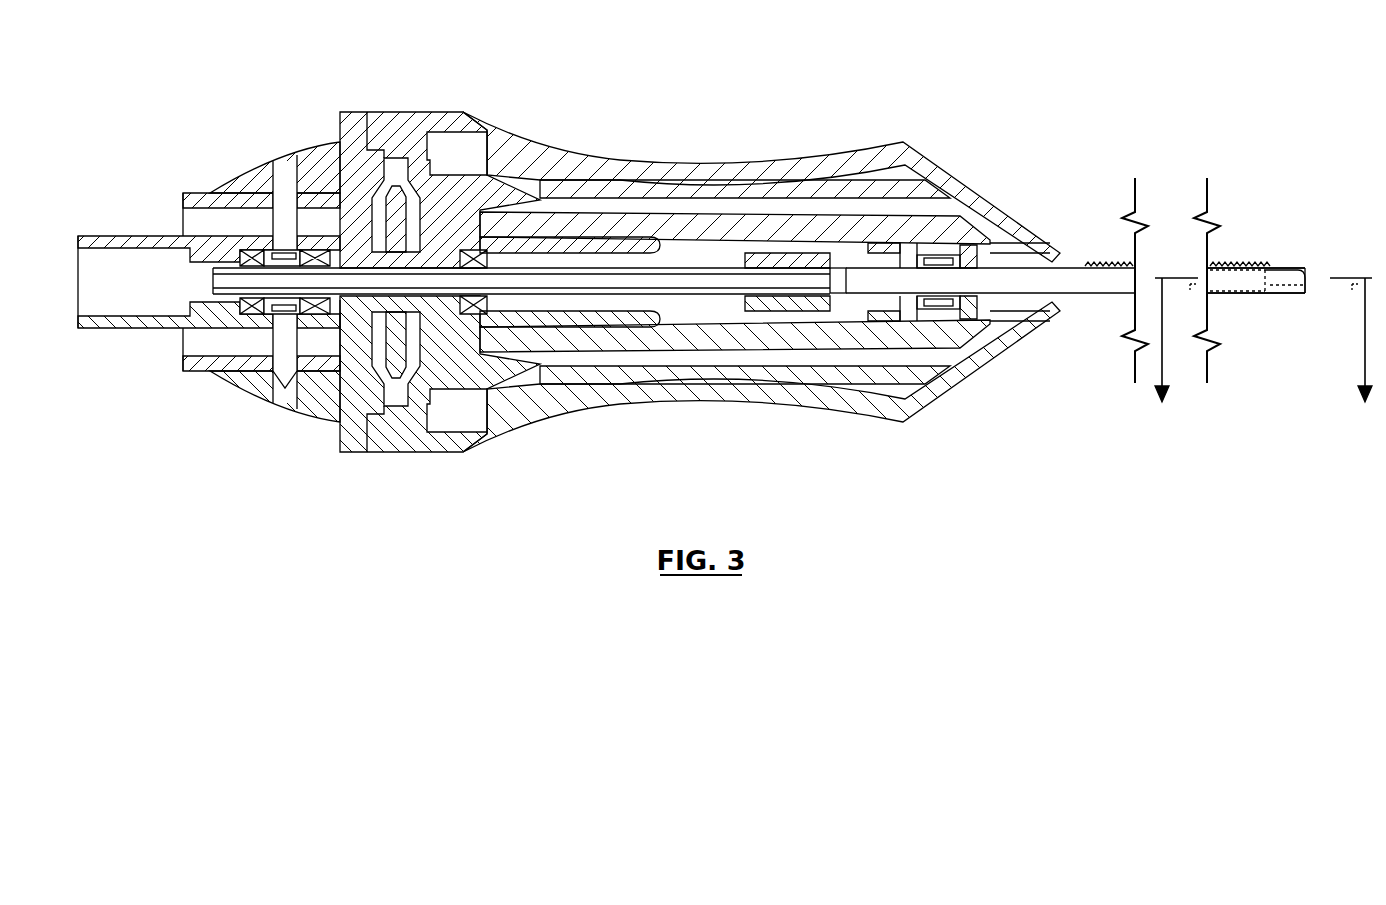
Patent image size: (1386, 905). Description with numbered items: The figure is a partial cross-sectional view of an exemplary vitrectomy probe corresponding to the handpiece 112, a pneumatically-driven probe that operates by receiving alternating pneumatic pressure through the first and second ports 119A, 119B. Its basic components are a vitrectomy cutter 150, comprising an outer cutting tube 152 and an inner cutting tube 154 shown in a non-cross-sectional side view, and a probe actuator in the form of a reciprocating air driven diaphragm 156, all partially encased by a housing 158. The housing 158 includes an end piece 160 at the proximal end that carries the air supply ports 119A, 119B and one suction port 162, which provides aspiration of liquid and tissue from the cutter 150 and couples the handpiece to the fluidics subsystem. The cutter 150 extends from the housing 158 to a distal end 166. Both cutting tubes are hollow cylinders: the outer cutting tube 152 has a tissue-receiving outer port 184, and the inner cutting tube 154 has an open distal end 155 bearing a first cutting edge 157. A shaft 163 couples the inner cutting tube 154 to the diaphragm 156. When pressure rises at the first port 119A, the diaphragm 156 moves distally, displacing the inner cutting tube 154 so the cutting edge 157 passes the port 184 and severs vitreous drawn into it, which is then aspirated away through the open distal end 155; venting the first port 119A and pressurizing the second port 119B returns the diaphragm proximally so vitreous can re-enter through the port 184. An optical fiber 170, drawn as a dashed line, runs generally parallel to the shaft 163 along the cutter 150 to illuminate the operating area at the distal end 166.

The handpiece 112 is at (1147, 70).
The end piece 160 is at (247, 148).
The housing 158 is at (600, 153).
The first port 119A is at (190, 218).
The second port 119B is at (191, 338).
The suction port 162 is at (82, 298).
The shaft 163 is at (336, 300).
The reciprocating air driven diaphragm 156 is at (414, 306).
The inner cutting tube 154 is at (918, 292).
The outer cutting tube 152 is at (1082, 300).
The optical fiber 170 is at (1256, 242).
The tissue-receiving outer port 184 is at (1283, 262).
The distal end 166 is at (1307, 239).
The first cutting edge 157 is at (1298, 268).
The open distal end 155 is at (1283, 298).
The vitrectomy cutter 150 is at (1280, 336).